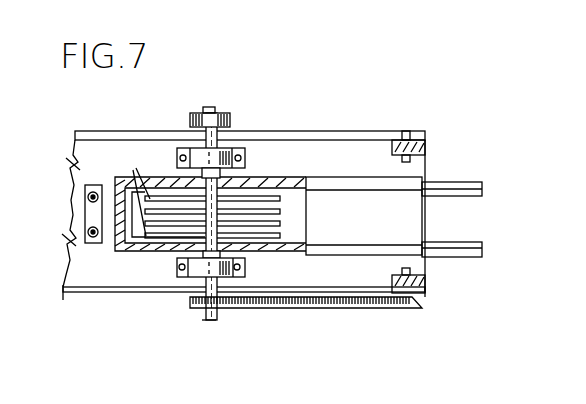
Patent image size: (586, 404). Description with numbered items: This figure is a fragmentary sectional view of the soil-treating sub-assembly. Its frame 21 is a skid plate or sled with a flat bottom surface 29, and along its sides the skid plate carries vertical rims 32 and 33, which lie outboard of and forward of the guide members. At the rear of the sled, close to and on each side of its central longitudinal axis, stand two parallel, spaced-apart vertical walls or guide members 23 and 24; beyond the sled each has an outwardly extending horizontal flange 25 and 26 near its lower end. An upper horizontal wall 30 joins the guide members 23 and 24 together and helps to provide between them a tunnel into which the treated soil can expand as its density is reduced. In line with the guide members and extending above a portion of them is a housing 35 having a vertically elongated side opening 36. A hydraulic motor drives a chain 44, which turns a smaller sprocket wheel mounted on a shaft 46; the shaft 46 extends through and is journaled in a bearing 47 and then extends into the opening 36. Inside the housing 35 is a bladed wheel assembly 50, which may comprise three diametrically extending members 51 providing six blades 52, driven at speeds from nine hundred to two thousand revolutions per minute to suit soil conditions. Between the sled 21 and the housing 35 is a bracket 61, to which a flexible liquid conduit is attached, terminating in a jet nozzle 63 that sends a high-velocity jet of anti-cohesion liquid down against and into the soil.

The frame 21 is at (90, 150).
The guide member 23 is at (460, 193).
The guide member 24 is at (478, 242).
The horizontal flange 25 is at (477, 181).
The horizontal flange 26 is at (450, 258).
The flat bottom surface 29 is at (108, 282).
The upper horizontal wall 30 is at (381, 221).
The vertical rim 32 is at (320, 133).
The vertical rim 33 is at (137, 293).
The housing 35 is at (256, 184).
The side opening 36 is at (188, 251).
The chain 44 is at (277, 314).
The shaft 46 is at (212, 320).
The bearing 47 is at (243, 262).
The bladed wheel assembly 50 is at (290, 225).
The diametrically extending member 51 is at (203, 208).
The blade 52 is at (150, 210).
The bracket 61 is at (68, 257).
The jet nozzle 63 is at (85, 246).